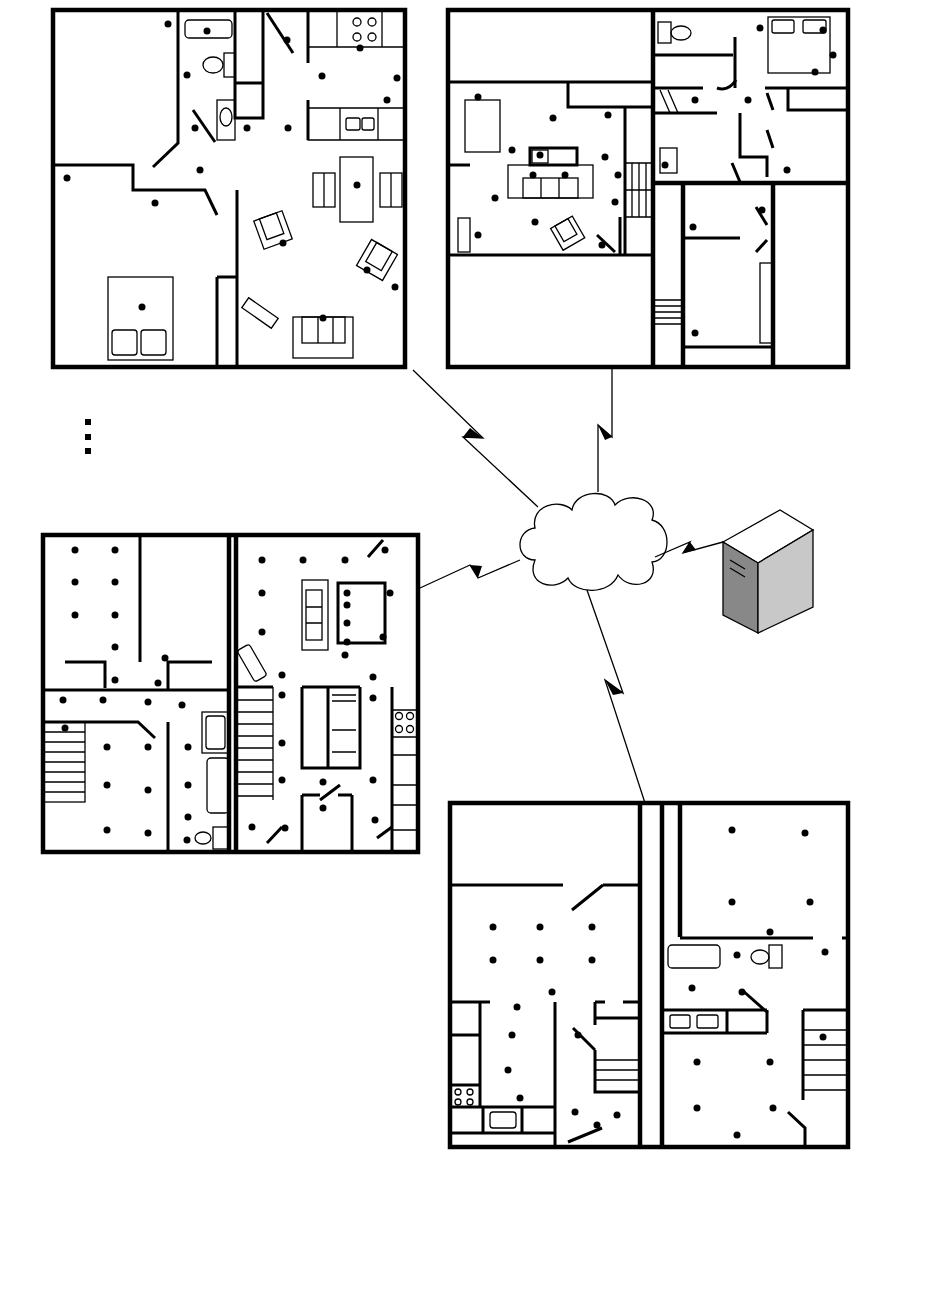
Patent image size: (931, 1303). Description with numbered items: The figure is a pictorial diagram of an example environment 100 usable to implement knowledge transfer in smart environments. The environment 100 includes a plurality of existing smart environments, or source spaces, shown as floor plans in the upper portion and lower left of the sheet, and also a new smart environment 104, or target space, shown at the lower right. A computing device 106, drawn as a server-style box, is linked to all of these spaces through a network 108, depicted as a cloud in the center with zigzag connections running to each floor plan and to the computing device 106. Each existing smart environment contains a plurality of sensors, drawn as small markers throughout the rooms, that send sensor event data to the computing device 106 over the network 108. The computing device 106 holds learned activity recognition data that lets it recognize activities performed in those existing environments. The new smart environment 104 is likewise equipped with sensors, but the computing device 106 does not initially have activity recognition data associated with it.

The example environment 100 is at (319, 924).
The new smart environment 104 is at (728, 803).
The computing device 106 is at (756, 633).
The network 108 is at (642, 492).